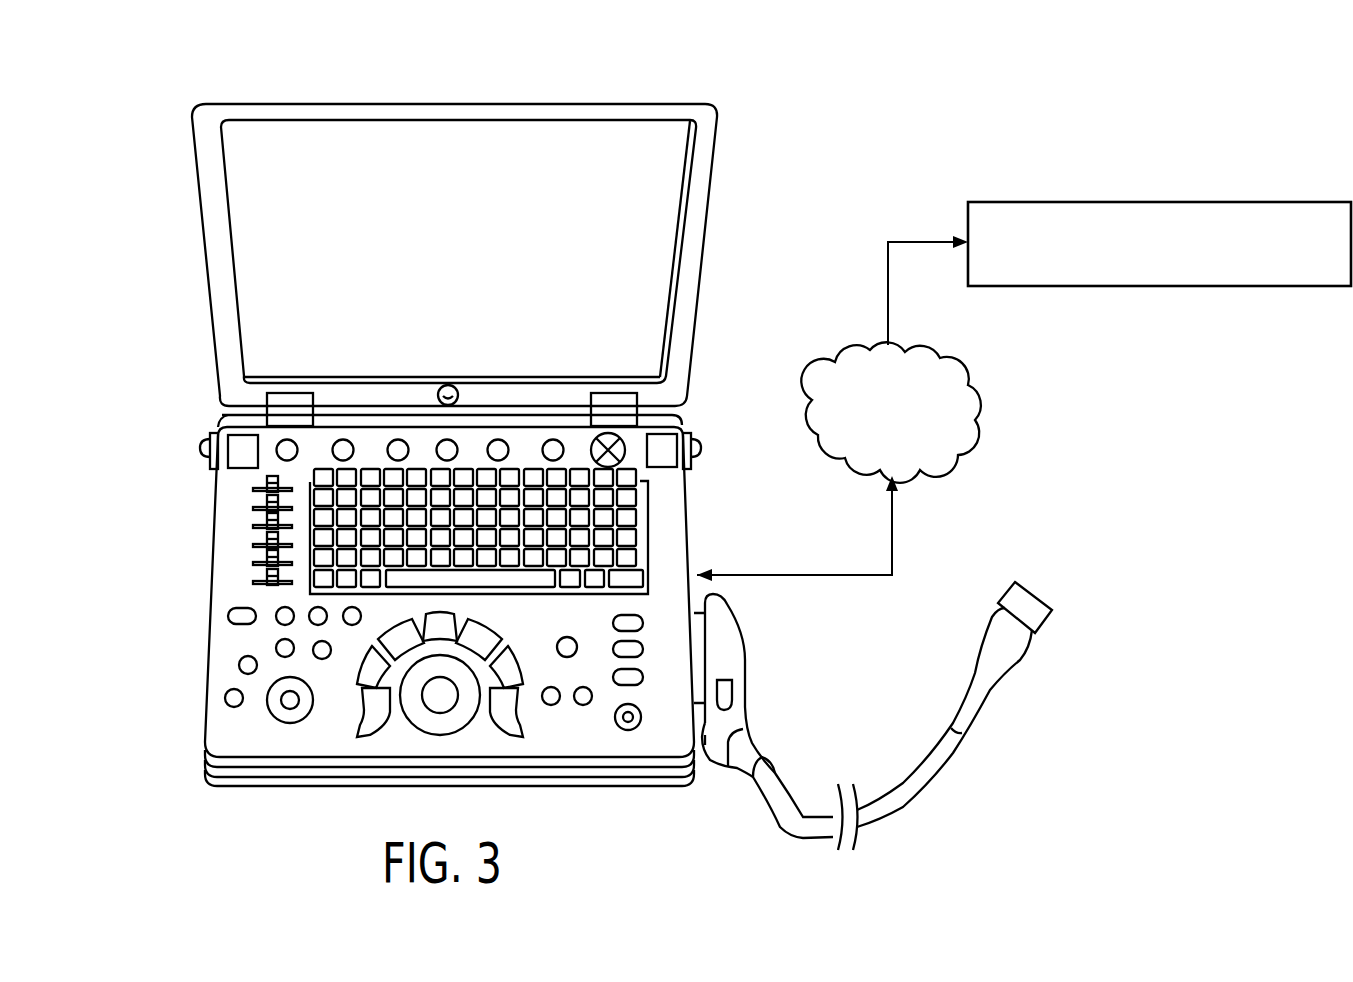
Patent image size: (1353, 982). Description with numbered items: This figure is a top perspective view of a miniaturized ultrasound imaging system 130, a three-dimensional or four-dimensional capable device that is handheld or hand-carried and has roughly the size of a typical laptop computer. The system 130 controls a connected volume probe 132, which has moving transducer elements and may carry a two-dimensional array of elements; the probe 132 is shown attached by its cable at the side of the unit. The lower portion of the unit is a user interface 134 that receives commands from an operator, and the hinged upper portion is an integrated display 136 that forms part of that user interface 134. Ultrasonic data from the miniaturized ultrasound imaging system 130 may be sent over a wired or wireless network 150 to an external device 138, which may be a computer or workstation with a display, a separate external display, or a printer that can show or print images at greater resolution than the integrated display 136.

The miniaturized ultrasound imaging system 130 is at (170, 68).
The volume probe 132 is at (870, 840).
The user interface 134 is at (200, 462).
The integrated display 136 is at (184, 104).
The external device 138 is at (1160, 202).
The network 150 is at (832, 358).